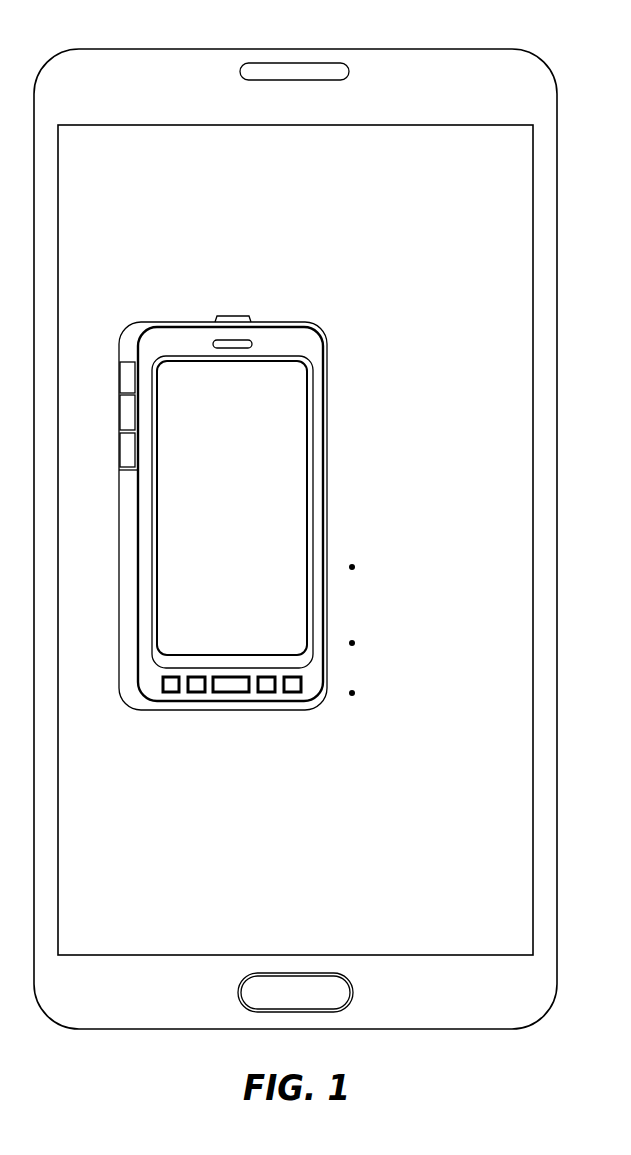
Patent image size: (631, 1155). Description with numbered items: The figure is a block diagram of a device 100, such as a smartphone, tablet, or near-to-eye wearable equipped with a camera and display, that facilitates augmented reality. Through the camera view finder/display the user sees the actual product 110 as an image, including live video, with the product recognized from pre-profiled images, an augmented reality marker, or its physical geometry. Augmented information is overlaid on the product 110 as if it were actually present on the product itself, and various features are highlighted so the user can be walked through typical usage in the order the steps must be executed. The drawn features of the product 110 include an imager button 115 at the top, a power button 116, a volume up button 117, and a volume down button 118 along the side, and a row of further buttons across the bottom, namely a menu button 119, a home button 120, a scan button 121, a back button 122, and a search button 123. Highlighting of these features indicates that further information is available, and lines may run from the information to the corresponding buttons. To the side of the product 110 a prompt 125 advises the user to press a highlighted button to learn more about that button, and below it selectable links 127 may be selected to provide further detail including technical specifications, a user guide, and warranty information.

The device 100 is at (294, 48).
The product 110 is at (325, 516).
The imager button 115 is at (232, 316).
The power button 116 is at (120, 377).
The volume up button 117 is at (121, 414).
The volume down button 118 is at (121, 444).
The menu button 119 is at (170, 684).
The home button 120 is at (195, 686).
The scan button 121 is at (233, 686).
The back button 122 is at (268, 686).
The search button 123 is at (292, 686).
The prompt 125 is at (417, 353).
The selectable links 127 is at (417, 549).